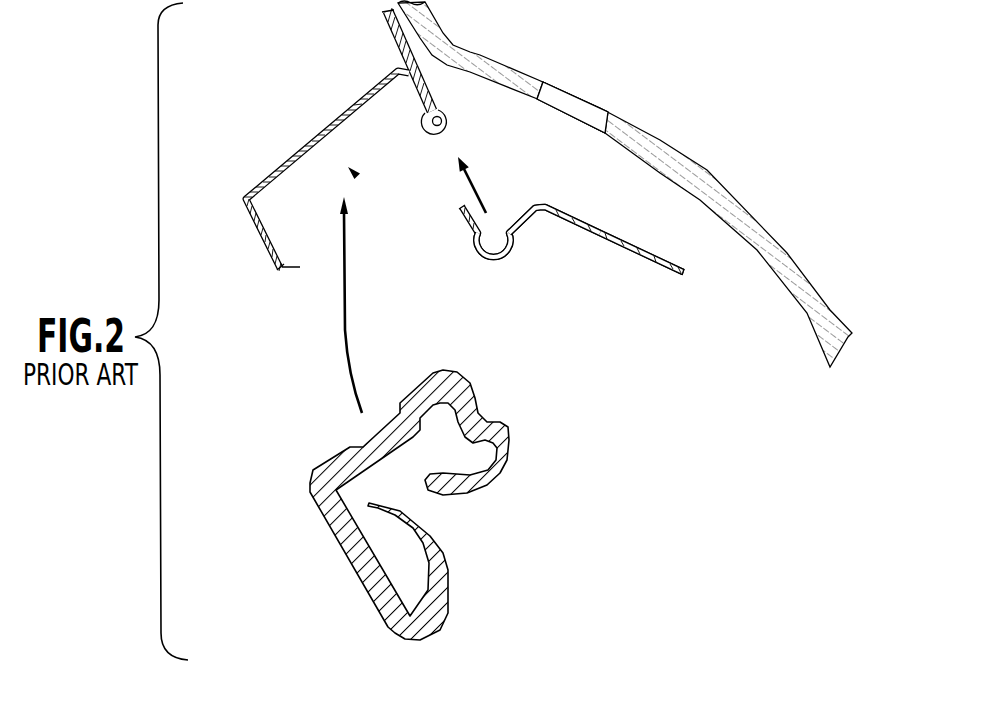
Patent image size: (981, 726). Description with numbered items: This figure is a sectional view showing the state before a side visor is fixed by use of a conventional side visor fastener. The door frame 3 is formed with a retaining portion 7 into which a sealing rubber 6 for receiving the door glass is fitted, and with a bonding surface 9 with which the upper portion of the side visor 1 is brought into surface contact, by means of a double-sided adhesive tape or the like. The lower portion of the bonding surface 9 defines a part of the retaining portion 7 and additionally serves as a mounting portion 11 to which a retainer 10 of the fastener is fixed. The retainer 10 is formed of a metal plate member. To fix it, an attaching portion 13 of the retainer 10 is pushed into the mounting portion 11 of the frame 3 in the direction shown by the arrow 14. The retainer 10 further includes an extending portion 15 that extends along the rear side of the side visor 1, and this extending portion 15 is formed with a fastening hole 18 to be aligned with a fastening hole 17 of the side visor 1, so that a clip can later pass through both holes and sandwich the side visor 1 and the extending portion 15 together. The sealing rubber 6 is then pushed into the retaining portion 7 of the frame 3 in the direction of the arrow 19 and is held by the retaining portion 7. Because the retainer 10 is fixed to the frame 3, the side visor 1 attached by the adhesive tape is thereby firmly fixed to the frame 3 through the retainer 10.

The side visor 1 is at (693, 143).
The frame 3 is at (298, 121).
The sealing rubber 6 is at (310, 476).
The retaining portion 7 is at (357, 176).
The bonding surface 9 is at (398, 33).
The retainer 10 is at (458, 253).
The mounting portion 11 is at (450, 125).
The attaching portion 13 is at (494, 263).
The arrow 14 is at (472, 184).
The extending portion 15 is at (568, 215).
The fastening hole 17 is at (572, 100).
The fastening hole 18 is at (618, 246).
The arrow 19 is at (343, 328).